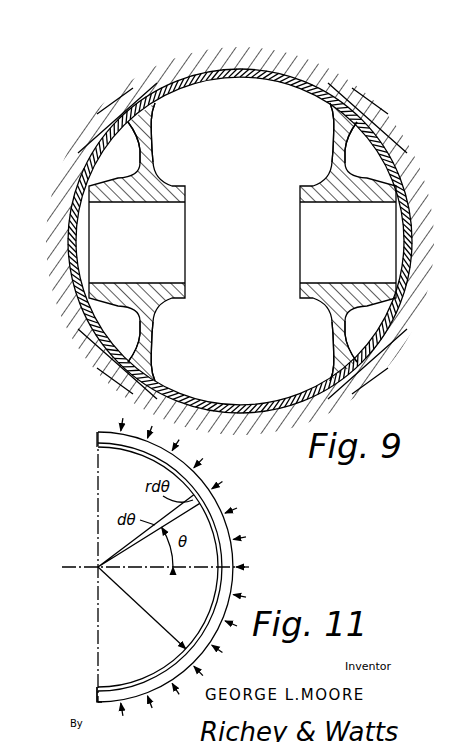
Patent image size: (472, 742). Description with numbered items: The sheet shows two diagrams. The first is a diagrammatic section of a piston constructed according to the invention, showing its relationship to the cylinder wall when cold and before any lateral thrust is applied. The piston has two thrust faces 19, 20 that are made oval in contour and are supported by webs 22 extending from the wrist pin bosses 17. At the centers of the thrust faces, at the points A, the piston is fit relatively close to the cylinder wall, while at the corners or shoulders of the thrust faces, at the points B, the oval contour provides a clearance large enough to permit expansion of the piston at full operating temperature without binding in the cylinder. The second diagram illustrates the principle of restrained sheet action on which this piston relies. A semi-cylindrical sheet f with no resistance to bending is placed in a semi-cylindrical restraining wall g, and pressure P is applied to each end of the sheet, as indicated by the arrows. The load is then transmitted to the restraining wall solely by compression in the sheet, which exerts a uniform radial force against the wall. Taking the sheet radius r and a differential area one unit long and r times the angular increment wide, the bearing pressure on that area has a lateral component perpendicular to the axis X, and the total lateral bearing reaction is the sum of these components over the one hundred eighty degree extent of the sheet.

In FIG. 9, the wrist pin boss 17 is at (160, 288).
In FIG. 9, the thrust face 19 is at (243, 79).
In FIG. 9, the thrust face 20 is at (243, 403).
In FIG. 9, the web 22 is at (154, 147).
In FIG. 9, the center point of thrust face A is at (243, 69).
In FIG. 9, the corner or shoulder point of thrust face B is at (132, 110).
In FIG. 11, the pressure P is at (96, 445).
In FIG. 11, the axis X is at (98, 502).
In FIG. 11, the sheet f is at (148, 457).
In FIG. 11, the radius r is at (142, 608).
In FIG. 11, the restraining wall g is at (110, 697).